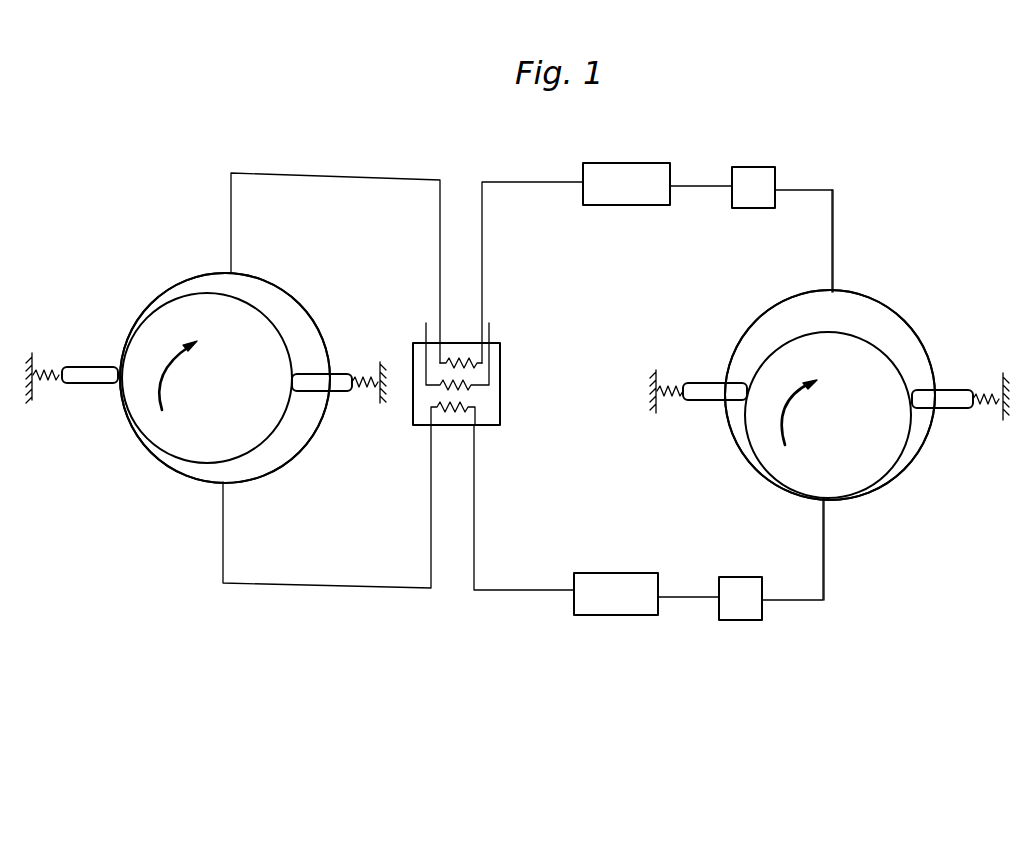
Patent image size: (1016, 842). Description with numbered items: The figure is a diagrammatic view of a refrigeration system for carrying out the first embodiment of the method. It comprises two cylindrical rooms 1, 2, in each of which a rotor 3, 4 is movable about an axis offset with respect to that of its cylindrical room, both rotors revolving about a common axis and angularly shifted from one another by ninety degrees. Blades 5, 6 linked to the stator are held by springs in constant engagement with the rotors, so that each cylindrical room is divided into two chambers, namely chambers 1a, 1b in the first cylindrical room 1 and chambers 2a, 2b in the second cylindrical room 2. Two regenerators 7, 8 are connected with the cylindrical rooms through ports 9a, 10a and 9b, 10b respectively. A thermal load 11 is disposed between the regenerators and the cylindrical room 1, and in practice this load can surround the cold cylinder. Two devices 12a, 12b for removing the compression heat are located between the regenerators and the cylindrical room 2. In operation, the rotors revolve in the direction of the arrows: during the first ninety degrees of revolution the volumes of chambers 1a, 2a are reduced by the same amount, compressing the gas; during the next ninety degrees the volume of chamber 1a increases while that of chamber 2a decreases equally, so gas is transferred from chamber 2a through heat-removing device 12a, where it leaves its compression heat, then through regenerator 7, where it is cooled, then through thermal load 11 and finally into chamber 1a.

The cylindrical room 1 is at (318, 323).
The chamber 1a is at (178, 296).
The chamber 1b is at (160, 458).
The cylindrical room 2 is at (880, 310).
The chamber 2a is at (833, 308).
The chamber 2b is at (908, 458).
The rotor 3 is at (272, 322).
The rotor 4 is at (888, 352).
The blade 5 is at (80, 375).
The blade 6 is at (710, 386).
The regenerator 7 is at (590, 172).
The regenerator 8 is at (608, 608).
The port 9a is at (232, 273).
The port 9b is at (226, 487).
The port 10a is at (830, 290).
The port 10b is at (826, 500).
The thermal load 11 is at (493, 383).
The heat-removing device 12a is at (762, 182).
The heat-removing device 12b is at (735, 620).